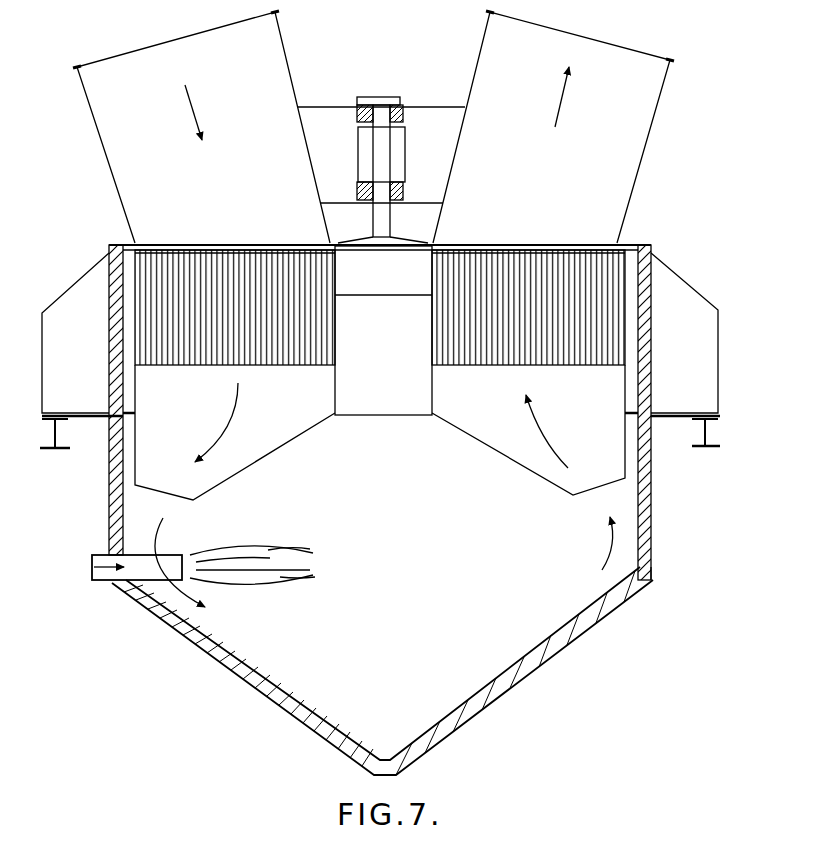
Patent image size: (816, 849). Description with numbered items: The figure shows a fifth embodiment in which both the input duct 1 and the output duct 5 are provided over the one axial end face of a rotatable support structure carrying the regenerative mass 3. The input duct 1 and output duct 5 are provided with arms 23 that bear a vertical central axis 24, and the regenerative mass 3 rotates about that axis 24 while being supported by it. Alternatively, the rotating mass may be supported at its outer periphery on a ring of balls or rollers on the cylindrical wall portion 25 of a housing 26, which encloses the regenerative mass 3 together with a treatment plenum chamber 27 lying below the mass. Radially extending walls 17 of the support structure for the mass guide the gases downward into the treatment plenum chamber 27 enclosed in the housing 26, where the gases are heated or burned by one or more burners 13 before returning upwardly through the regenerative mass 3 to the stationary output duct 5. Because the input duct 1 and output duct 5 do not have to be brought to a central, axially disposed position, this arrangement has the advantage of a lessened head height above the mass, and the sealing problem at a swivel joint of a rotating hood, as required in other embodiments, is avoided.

The input duct 1 is at (217, 180).
The output duct 5 is at (545, 183).
The regenerative mass 3 is at (617, 285).
The arms 23 is at (335, 122).
The vertical central axis 24 is at (382, 150).
The radially extending walls 17 is at (492, 427).
The cylindrical wall portion 25 is at (648, 472).
The burner 13 is at (104, 572).
The housing 26 is at (168, 634).
The treatment plenum chamber 27 is at (410, 610).